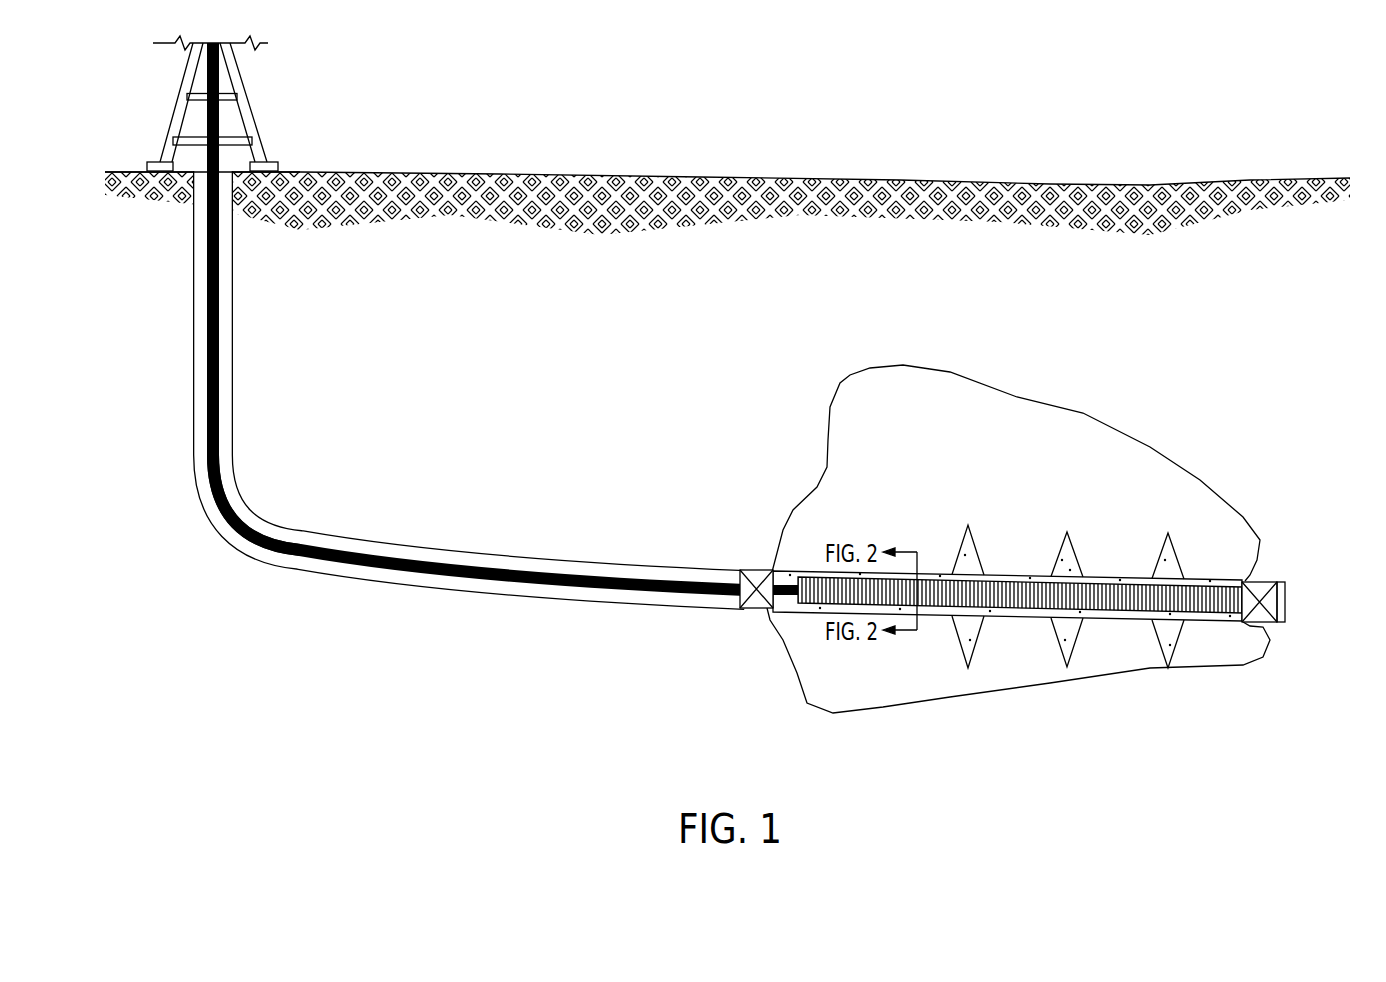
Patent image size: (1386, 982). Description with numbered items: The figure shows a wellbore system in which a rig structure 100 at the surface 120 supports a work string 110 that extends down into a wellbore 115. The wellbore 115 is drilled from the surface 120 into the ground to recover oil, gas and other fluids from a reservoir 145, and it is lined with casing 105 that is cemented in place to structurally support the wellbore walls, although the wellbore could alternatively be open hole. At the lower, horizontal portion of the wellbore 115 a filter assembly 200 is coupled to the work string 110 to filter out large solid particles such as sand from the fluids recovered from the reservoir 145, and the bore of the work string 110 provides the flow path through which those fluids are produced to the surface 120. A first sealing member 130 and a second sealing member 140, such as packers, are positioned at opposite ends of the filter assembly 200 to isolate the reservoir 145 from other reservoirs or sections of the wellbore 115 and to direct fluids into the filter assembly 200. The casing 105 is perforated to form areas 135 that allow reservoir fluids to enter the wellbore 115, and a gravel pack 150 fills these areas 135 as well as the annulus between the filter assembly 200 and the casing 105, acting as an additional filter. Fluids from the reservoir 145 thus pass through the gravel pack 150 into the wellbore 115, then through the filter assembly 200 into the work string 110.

The rig structure 100 is at (272, 93).
The casing 105 is at (233, 413).
The work string 110 is at (223, 503).
The wellbore 115 is at (200, 422).
The surface 120 is at (958, 176).
The first sealing member 130 is at (758, 573).
The areas 135 is at (975, 540).
The second sealing member 140 is at (1263, 592).
The reservoir 145 is at (840, 368).
The gravel pack 150 is at (1068, 565).
The filter assembly 200 is at (812, 604).